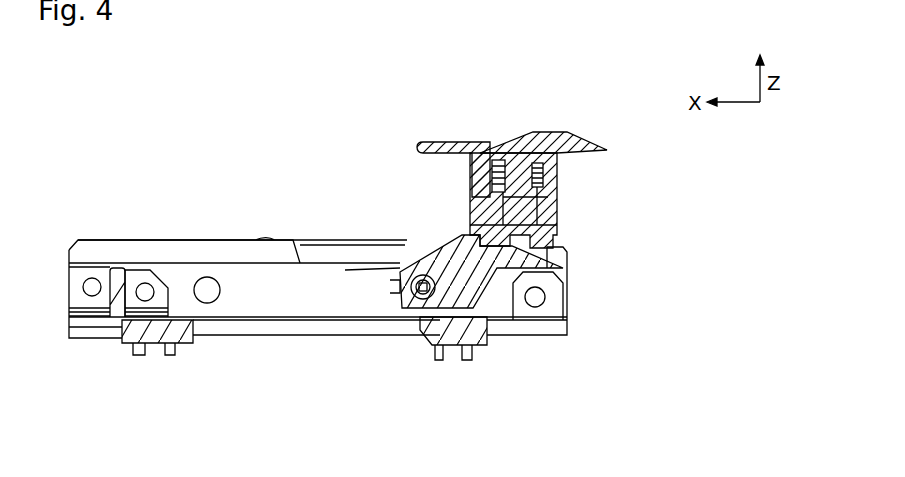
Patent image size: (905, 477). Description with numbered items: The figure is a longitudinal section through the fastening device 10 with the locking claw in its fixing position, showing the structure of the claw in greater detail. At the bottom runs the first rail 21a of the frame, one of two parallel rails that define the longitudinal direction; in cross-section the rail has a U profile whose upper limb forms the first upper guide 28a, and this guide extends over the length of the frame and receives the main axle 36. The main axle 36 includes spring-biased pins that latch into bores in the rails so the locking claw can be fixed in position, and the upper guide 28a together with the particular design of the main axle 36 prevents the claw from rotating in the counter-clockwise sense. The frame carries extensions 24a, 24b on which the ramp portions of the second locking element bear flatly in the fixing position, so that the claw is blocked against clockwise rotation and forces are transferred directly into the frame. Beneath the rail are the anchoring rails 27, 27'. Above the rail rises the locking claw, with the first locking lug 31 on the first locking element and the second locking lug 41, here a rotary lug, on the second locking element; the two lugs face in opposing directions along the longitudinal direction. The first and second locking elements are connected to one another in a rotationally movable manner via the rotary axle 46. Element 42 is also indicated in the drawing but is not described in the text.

The fastening device 10 is at (257, 168).
The first rail 21a is at (227, 300).
The extension 24a is at (269, 240).
The extension 24b is at (614, 4).
The anchoring rail 27 is at (139, 376).
The anchoring rail 27' is at (480, 374).
The first upper guide 28a is at (125, 250).
The first locking lug 31 is at (552, 135).
The main axle 36 is at (423, 288).
The second locking lug 41 is at (433, 147).
The housing 42 is at (547, 208).
The rotary axle 46 is at (517, 177).